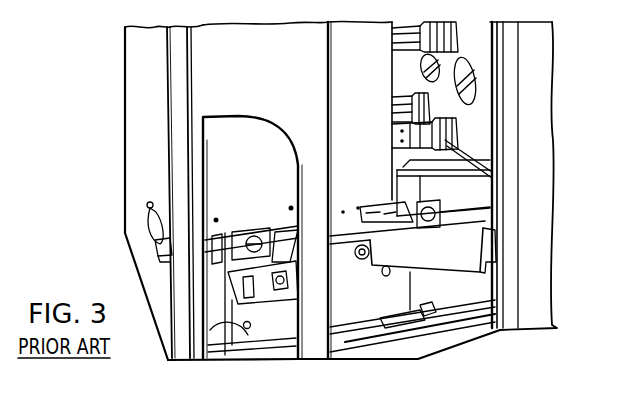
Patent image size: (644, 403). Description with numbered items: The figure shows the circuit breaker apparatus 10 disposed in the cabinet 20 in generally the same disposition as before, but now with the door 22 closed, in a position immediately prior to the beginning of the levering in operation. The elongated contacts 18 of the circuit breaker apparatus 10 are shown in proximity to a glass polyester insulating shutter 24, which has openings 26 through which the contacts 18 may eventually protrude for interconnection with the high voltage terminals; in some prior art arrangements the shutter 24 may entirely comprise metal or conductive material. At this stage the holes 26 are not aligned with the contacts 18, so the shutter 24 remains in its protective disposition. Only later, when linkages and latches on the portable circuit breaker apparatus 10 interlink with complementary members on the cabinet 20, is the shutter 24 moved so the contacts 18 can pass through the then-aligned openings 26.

The circuit breaker apparatus 10 is at (334, 85).
The contacts 18 is at (416, 45).
The cabinet 20 is at (204, 90).
The door 22 is at (135, 92).
The insulating shutter 24 is at (480, 145).
The openings 26 is at (474, 79).